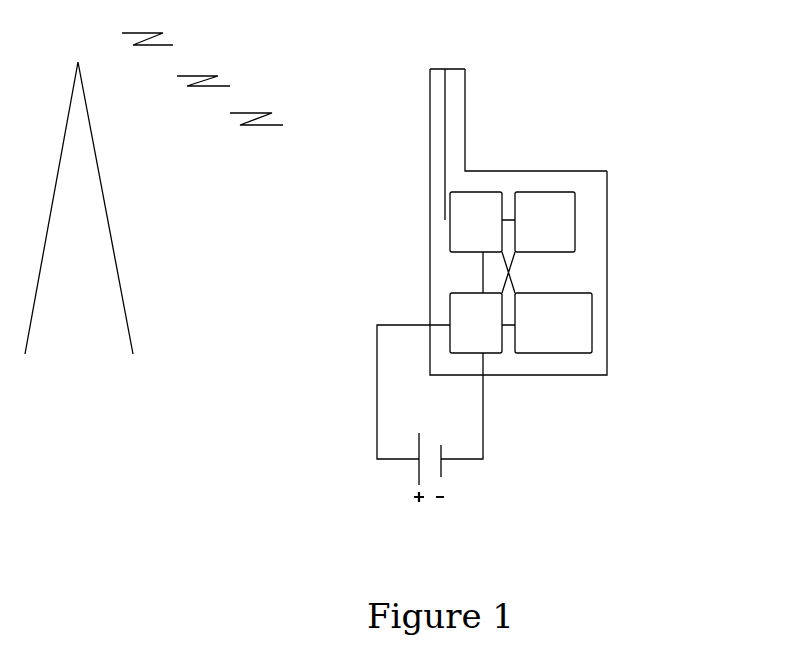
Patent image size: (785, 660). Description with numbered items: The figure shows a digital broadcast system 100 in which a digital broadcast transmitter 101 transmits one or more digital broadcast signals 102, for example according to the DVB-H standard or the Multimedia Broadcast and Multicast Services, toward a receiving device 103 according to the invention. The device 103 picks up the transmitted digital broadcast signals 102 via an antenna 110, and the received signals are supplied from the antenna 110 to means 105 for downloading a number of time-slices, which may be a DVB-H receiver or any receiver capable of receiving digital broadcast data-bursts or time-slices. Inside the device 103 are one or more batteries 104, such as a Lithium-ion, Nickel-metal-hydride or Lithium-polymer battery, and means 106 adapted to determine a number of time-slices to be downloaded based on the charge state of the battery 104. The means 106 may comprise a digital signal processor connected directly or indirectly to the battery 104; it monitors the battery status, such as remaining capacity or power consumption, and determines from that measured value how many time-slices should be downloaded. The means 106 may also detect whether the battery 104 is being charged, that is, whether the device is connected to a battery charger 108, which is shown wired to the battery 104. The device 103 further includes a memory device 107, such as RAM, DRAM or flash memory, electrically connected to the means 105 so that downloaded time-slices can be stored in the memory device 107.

The digital broadcast system 100 is at (182, 485).
The digital broadcast transmitter 101 is at (116, 262).
The digital broadcast signals 102 is at (198, 75).
The device 103 is at (470, 170).
The battery 104 is at (477, 293).
The means for downloading a number of time-slices 105 is at (473, 192).
The means adapted to determine a number of time-slices to be downloaded 106 is at (543, 192).
The memory device 107 is at (543, 293).
The battery charger 108 is at (431, 459).
The antenna 110 is at (450, 69).